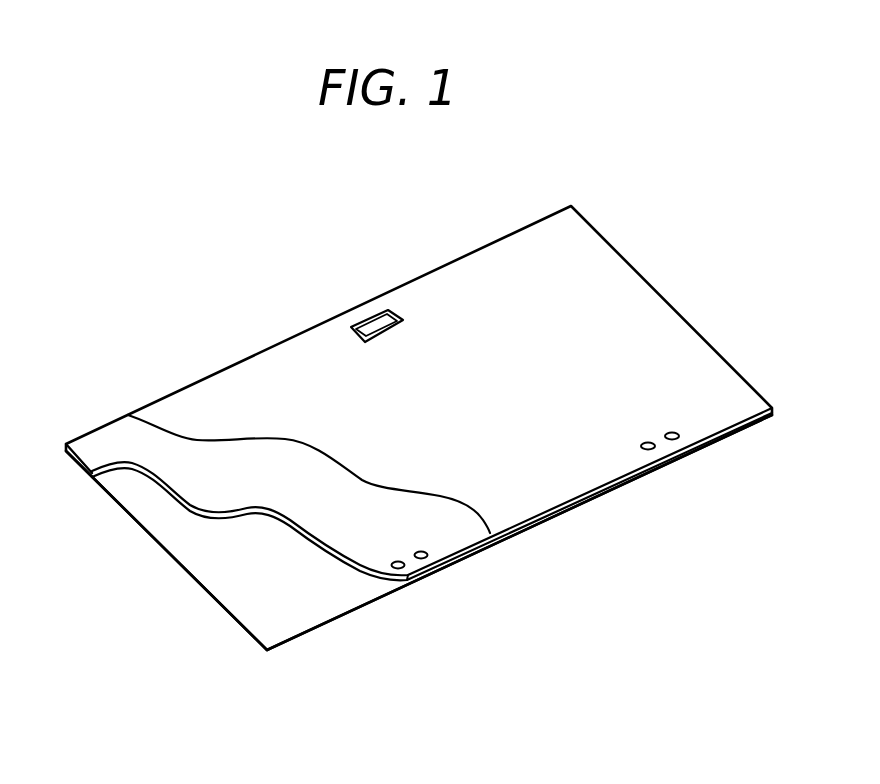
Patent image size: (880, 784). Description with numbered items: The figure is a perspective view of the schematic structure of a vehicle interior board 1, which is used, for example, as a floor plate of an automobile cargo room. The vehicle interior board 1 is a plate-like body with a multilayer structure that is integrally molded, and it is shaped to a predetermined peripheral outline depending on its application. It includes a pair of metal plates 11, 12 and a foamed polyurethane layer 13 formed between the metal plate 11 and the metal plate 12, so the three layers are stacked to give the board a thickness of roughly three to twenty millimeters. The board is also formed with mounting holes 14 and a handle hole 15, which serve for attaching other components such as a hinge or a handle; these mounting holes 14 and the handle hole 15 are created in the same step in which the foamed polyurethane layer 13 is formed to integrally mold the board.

The vehicle interior board 1 is at (122, 248).
The metal plate 11 is at (305, 612).
The metal plate 12 is at (493, 483).
The foamed polyurethane layer 13 is at (113, 438).
The mounting holes 14 is at (648, 441).
The handle hole 15 is at (372, 318).